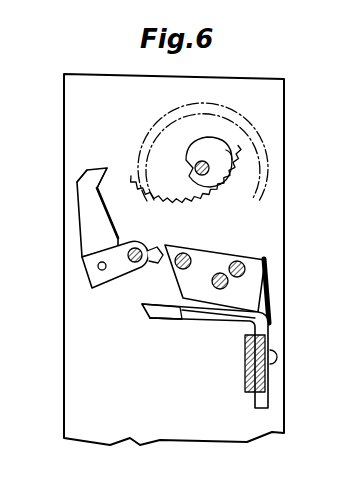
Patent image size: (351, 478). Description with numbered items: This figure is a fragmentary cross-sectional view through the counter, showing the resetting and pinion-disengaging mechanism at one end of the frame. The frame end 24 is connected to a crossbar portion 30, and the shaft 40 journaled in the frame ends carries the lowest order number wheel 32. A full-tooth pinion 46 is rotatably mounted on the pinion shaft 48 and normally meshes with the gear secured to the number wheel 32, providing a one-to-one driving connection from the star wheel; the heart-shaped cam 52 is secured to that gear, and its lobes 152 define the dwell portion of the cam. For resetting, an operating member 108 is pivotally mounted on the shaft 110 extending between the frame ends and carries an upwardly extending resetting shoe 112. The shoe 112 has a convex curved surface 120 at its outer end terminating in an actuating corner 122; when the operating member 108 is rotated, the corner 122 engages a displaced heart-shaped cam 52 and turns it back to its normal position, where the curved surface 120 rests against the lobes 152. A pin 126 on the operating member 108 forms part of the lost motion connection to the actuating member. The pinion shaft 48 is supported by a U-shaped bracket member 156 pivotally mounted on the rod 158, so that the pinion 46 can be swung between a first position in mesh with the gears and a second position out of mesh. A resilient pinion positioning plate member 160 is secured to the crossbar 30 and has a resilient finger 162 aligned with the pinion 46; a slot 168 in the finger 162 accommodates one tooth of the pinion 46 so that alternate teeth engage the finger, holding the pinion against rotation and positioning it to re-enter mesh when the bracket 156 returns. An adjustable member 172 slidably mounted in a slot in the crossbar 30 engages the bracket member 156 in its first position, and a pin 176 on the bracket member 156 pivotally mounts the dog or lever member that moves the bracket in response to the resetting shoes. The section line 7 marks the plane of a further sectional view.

The section line 7— 7 is at (50, 151).
The frame end 24 is at (254, 78).
The crossbar portion 30 is at (245, 373).
The lowest order number wheel 32 is at (250, 125).
The shaft 40 is at (209, 171).
The full-tooth pinion 46 is at (212, 247).
The pinion shaft 48 is at (176, 267).
The heart-shaped cam 52 is at (229, 158).
The operating member 108 is at (83, 276).
The shaft 110 is at (135, 248).
The resetting shoe 112 is at (85, 223).
The curved surface 120 is at (88, 168).
The actuating corner 122 is at (107, 168).
The pin 126 is at (100, 273).
The lobe 152 is at (201, 174).
The U-shaped bracket member 156 is at (260, 287).
The rod 158 is at (245, 269).
The resilient pinion positioning plate member 160 is at (230, 328).
The resilient finger 162 is at (200, 319).
The slot 168 is at (162, 318).
The adjustable member 172 is at (272, 322).
The pin 176 is at (227, 286).